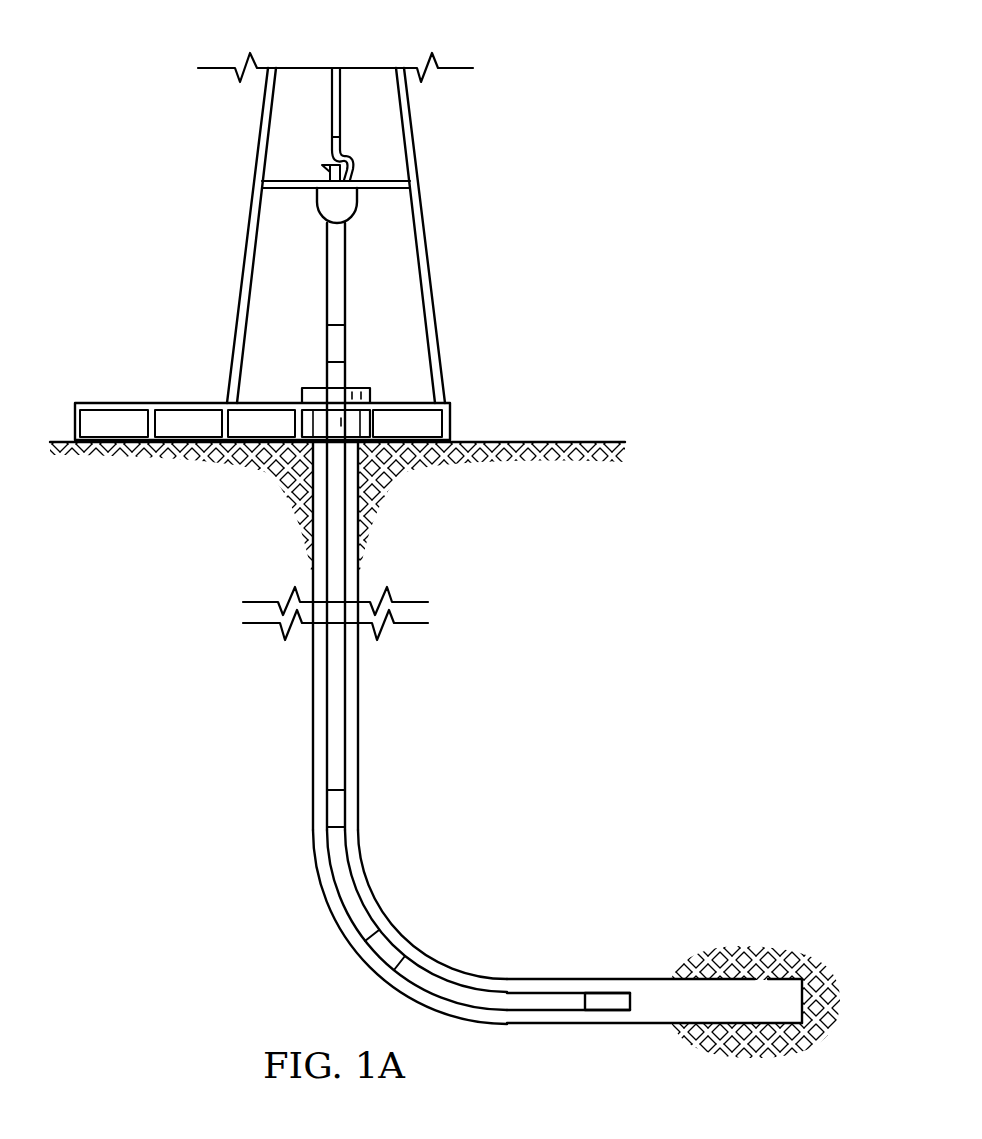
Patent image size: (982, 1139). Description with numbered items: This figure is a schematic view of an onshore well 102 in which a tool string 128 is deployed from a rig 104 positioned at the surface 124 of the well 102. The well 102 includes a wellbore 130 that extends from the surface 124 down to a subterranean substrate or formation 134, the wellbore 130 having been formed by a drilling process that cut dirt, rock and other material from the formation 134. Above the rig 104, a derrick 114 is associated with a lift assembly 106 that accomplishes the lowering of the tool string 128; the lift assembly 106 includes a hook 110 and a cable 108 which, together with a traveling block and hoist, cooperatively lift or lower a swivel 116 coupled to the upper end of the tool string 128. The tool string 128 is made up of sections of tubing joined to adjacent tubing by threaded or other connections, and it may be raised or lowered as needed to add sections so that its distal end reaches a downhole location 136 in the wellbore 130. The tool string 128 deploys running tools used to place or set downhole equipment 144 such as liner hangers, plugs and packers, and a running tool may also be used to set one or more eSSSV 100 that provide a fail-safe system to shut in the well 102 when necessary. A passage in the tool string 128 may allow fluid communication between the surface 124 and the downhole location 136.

The eSSSV 100 is at (345, 342).
The well 102 is at (315, 235).
The rig 104 is at (118, 403).
The lift assembly 106 is at (309, 78).
The cable 108 is at (332, 125).
The hook 110 is at (348, 172).
The derrick 114 is at (431, 265).
The swivel 116 is at (321, 222).
The surface 124 is at (600, 442).
The tool string 128 is at (328, 693).
The wellbore 130 is at (313, 738).
The formation 134 is at (746, 933).
The downhole location 136 is at (764, 970).
The downhole equipment 144 is at (608, 1002).